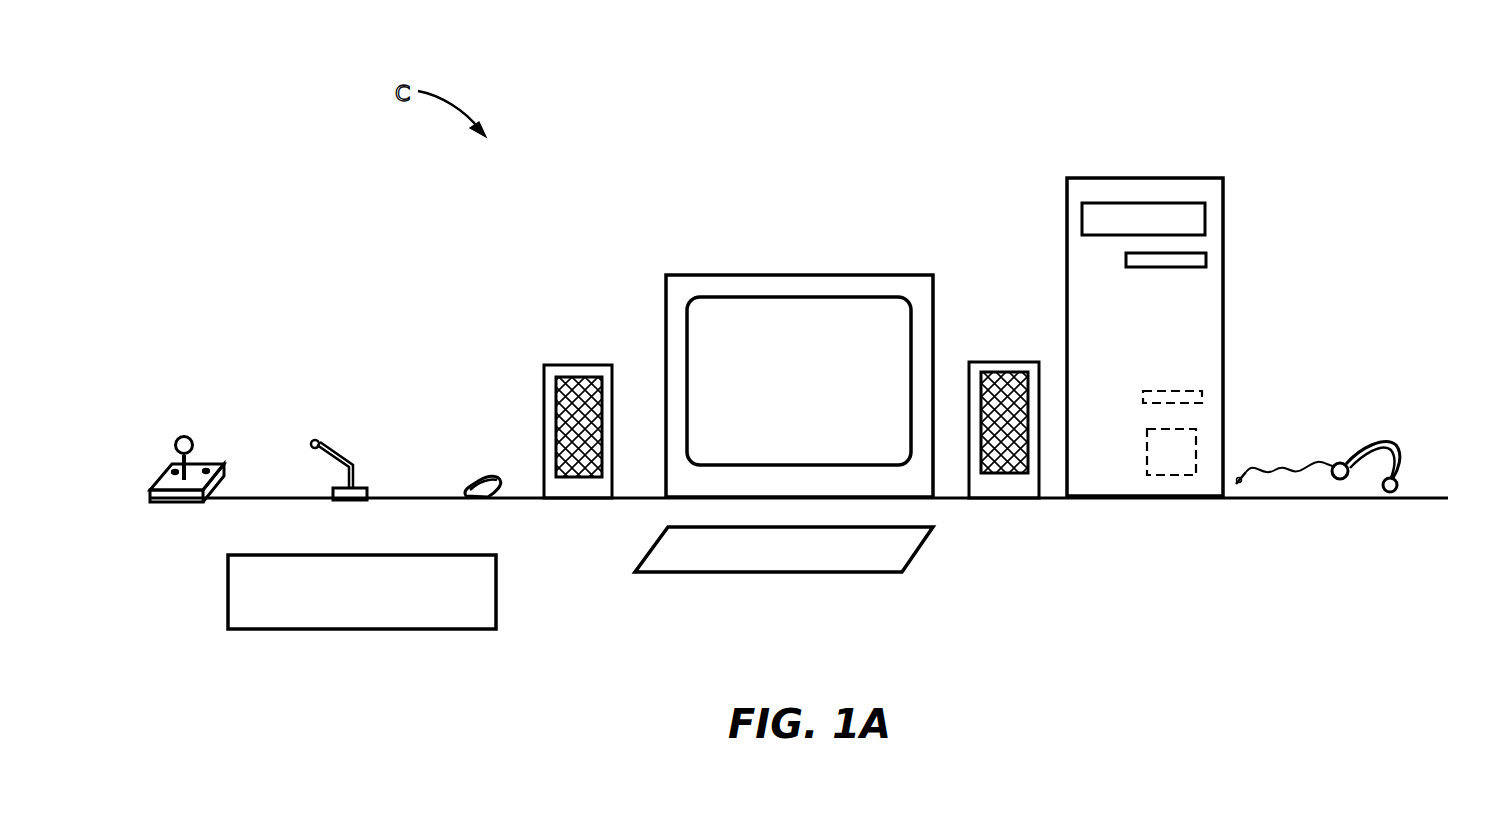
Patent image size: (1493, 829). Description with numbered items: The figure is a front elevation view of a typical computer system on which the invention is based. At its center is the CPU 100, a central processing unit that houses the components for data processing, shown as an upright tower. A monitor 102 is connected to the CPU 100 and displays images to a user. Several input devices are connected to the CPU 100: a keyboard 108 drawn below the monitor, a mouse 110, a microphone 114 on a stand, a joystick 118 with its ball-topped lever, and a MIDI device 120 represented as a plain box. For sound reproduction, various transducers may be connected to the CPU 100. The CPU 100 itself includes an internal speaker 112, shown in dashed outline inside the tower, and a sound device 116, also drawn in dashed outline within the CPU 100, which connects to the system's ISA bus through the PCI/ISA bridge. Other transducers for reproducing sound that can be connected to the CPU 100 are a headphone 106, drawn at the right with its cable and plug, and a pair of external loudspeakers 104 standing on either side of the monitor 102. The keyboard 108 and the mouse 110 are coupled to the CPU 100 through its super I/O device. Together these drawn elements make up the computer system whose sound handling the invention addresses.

The CPU 100 is at (1188, 178).
The monitor 102 is at (893, 275).
The external loudspeakers 104 is at (555, 365).
The headphone 106 is at (1405, 440).
The keyboard 108 is at (912, 556).
The mouse 110 is at (478, 478).
The internal speaker 112 is at (1196, 435).
The microphone 114 is at (314, 441).
The sound device 116 is at (1183, 391).
The joystick 118 is at (180, 440).
The MIDI device 120 is at (228, 582).